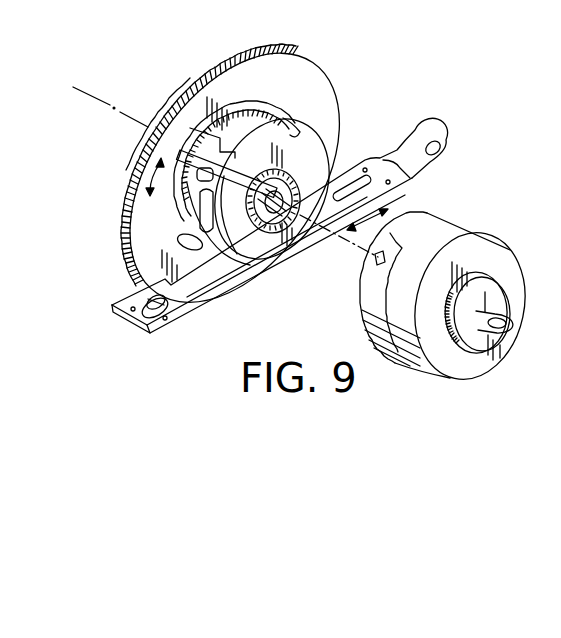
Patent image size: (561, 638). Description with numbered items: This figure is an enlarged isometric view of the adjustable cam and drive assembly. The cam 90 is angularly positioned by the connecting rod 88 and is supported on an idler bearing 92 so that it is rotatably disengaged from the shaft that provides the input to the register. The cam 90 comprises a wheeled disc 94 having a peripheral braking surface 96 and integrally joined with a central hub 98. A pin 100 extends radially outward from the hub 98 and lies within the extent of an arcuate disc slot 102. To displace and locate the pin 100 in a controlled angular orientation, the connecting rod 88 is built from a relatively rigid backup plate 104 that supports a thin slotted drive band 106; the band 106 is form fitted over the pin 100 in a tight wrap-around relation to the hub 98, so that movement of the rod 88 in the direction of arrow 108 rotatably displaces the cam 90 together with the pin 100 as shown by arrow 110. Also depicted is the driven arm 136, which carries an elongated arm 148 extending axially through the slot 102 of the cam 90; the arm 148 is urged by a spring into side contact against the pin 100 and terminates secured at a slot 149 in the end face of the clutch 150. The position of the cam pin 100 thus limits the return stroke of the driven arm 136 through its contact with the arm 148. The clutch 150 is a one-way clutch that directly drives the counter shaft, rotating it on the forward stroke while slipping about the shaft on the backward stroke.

The connecting rod 88 is at (430, 196).
The cam 90 is at (327, 62).
The idler bearing 92 is at (286, 220).
The wheeled disc 94 is at (256, 70).
The peripheral braking surface 96 is at (128, 214).
The central hub 98 is at (258, 247).
The pin 100 is at (195, 188).
The arcuate disc slot 102 is at (264, 100).
The backup plate 104 is at (176, 318).
The slotted drive band 106 is at (145, 306).
The arrow 108 is at (381, 258).
The arrow 110 is at (145, 174).
The driven arm 136 is at (146, 116).
The elongated arm 148 is at (288, 130).
The slot 149 is at (362, 257).
The clutch 150 is at (448, 217).